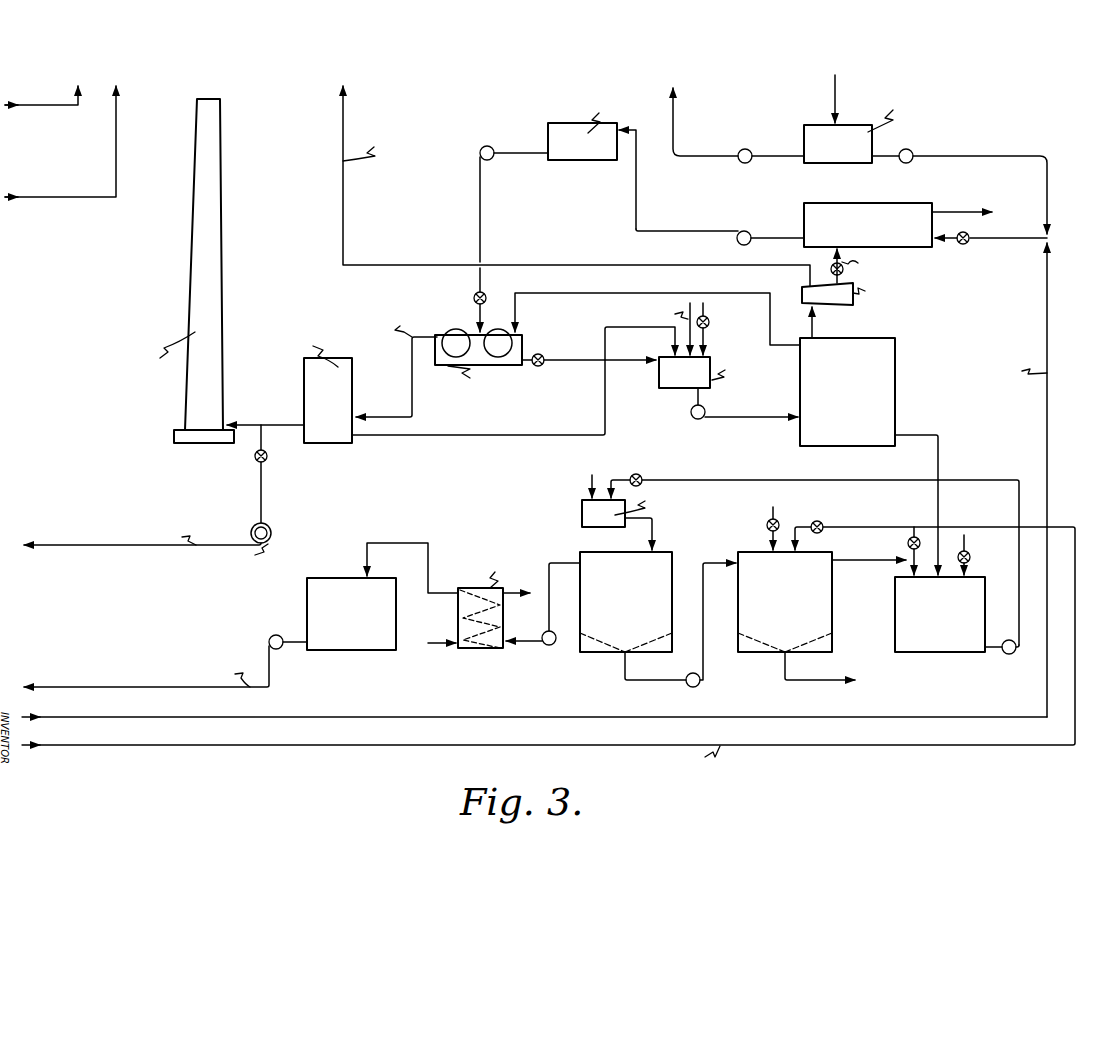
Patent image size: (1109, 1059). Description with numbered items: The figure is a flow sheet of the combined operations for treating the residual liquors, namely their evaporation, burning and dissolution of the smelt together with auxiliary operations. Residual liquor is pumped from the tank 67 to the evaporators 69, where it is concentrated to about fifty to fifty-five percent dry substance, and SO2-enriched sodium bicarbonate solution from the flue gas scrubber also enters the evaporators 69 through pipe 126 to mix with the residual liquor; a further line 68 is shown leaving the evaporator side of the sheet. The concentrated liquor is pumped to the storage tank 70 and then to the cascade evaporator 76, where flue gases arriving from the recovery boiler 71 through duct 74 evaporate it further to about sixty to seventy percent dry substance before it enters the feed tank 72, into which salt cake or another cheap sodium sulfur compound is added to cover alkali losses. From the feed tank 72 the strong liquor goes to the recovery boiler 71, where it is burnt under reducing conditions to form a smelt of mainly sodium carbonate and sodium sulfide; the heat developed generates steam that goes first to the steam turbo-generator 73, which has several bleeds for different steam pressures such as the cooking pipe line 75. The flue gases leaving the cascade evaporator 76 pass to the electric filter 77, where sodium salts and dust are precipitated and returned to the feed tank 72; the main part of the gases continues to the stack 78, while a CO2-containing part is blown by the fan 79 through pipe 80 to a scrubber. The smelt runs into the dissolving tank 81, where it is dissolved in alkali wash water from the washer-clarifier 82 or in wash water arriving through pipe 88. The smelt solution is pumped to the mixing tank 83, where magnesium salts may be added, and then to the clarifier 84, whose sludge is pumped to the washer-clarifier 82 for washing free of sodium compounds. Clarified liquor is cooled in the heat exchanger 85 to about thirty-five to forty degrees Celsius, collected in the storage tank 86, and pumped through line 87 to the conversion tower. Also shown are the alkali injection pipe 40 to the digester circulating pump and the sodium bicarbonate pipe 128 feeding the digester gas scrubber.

The pipe 128 is at (45, 100).
The pipe 40 is at (118, 151).
The cooking pipe line 75 is at (343, 119).
The stack 78 is at (200, 287).
The electric filter or precipitator 77 is at (313, 386).
The cascade evaporator 76 is at (525, 343).
The duct 74 is at (645, 293).
The feed tank 72 is at (678, 380).
The storage tank 70 is at (593, 152).
The outlet line 68 is at (675, 117).
The tank 67 is at (822, 126).
The evaporators 69 is at (890, 206).
The steam turbo-generator 73 is at (825, 302).
The recovery boiler 71 is at (869, 343).
The fan 79 is at (272, 527).
The pipe 80 is at (108, 546).
The mixing tank 83 is at (580, 505).
The clarifier 84 is at (667, 562).
The heat exchanger 85 is at (458, 616).
The storage tank 86 is at (368, 643).
The washer-clarifier 82 is at (830, 623).
The smelt dissolving tank 81 is at (956, 646).
The line 87 is at (100, 688).
The pipe 126 is at (115, 718).
The pipe 88 is at (105, 746).